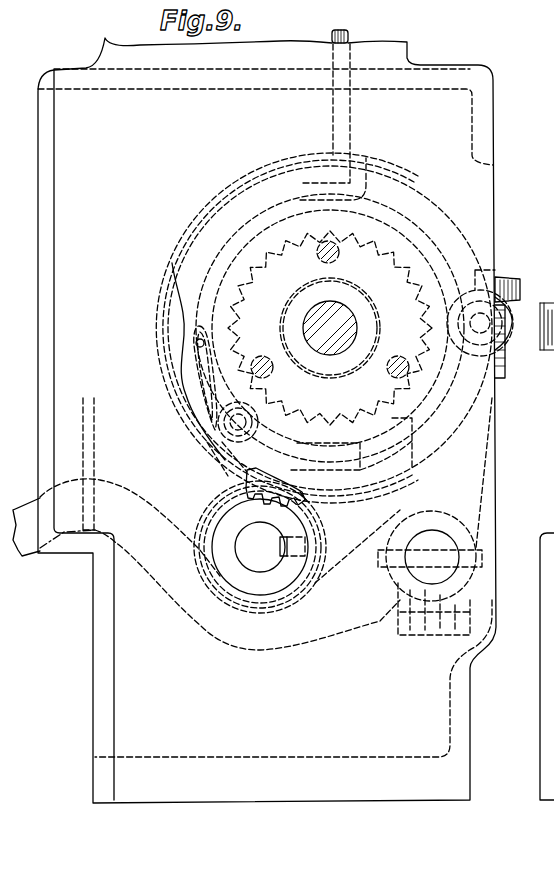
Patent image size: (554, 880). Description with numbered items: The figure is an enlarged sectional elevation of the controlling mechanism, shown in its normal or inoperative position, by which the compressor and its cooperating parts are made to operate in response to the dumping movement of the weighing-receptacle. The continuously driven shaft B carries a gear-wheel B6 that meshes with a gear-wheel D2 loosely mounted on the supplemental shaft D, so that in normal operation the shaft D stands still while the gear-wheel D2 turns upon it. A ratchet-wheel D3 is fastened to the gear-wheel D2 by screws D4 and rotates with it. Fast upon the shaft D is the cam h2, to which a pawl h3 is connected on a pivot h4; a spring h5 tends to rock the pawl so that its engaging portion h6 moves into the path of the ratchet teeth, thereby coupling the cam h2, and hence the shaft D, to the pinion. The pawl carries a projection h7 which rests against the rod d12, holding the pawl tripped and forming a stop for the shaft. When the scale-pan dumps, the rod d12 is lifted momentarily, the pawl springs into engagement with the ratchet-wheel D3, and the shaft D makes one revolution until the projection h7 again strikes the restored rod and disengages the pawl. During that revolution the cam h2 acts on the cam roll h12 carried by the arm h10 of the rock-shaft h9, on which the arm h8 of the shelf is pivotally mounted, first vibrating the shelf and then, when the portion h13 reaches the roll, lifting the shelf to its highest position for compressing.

The rod d12 is at (352, 106).
The projection h7 is at (363, 161).
The cam h2 is at (416, 196).
The pawl h3 is at (330, 340).
The engaging portion h6 is at (389, 421).
The ratchet-wheel D3 is at (396, 278).
The supplemental shaft D is at (346, 300).
The screws D4 is at (338, 248).
The portion of cam-wheel h13 is at (172, 263).
The spring h5 is at (207, 357).
The pivot h4 is at (225, 425).
The arm h8 is at (38, 555).
The gear-wheel D2 is at (248, 478).
The gear-wheel B6 is at (303, 504).
The shaft B is at (260, 547).
The rock-shaft h9 is at (440, 540).
The cam roll h12 is at (524, 288).
The arm h10 is at (505, 346).